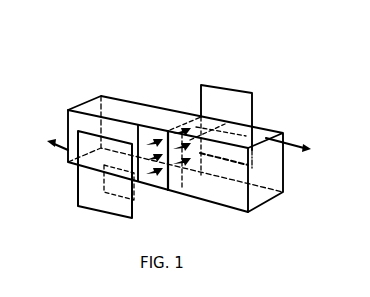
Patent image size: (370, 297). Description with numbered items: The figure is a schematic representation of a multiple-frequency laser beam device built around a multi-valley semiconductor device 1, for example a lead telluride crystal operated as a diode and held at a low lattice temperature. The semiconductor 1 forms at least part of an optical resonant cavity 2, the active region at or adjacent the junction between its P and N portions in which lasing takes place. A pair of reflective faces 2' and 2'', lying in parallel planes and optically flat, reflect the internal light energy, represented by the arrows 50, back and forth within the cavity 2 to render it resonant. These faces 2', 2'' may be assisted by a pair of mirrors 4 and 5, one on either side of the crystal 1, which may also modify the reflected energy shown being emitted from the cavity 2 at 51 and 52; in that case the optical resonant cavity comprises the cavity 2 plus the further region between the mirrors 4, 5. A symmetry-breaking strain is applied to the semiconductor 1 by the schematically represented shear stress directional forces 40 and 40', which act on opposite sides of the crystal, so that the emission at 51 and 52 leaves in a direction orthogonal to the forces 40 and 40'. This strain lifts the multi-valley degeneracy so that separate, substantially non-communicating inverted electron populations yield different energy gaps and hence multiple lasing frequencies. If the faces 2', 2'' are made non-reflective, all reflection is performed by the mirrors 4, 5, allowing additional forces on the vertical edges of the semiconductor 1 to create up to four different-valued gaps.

The multi-valley semiconductor device 1 is at (130, 100).
The optical resonant cavity 2 is at (202, 173).
The reflective face 2' is at (179, 164).
The reflective face 2'' is at (215, 131).
The mirror 4 is at (80, 208).
The mirror 5 is at (212, 105).
The shear stress directional force 40 is at (51, 157).
The shear stress directional force 40' is at (293, 134).
The arrows representing internal light energy 50 is at (175, 128).
The emitted reflected energy 51 is at (115, 190).
The emitted reflected energy 52 is at (211, 116).